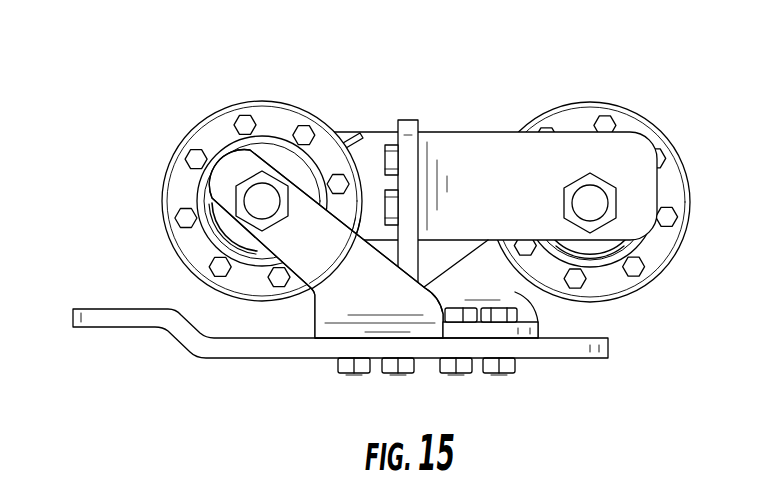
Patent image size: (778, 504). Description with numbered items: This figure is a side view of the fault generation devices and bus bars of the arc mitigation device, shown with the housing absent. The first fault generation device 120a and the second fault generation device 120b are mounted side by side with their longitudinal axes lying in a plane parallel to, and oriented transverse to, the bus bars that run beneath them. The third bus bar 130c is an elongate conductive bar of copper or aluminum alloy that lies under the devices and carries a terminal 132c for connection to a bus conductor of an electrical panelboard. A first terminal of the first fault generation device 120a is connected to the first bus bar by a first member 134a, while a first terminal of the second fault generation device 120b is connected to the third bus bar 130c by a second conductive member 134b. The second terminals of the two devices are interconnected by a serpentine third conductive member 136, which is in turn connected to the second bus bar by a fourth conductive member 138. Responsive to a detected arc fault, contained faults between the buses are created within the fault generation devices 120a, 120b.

The first fault generation device 120a is at (633, 127).
The second fault generation device 120b is at (277, 128).
The serpentine third conductive member 136 is at (510, 143).
The fourth conductive member 138 is at (409, 125).
The first member 134a is at (528, 300).
The second conductive member 134b is at (315, 255).
The terminal 132c is at (110, 318).
The third bus bar 130c is at (345, 350).